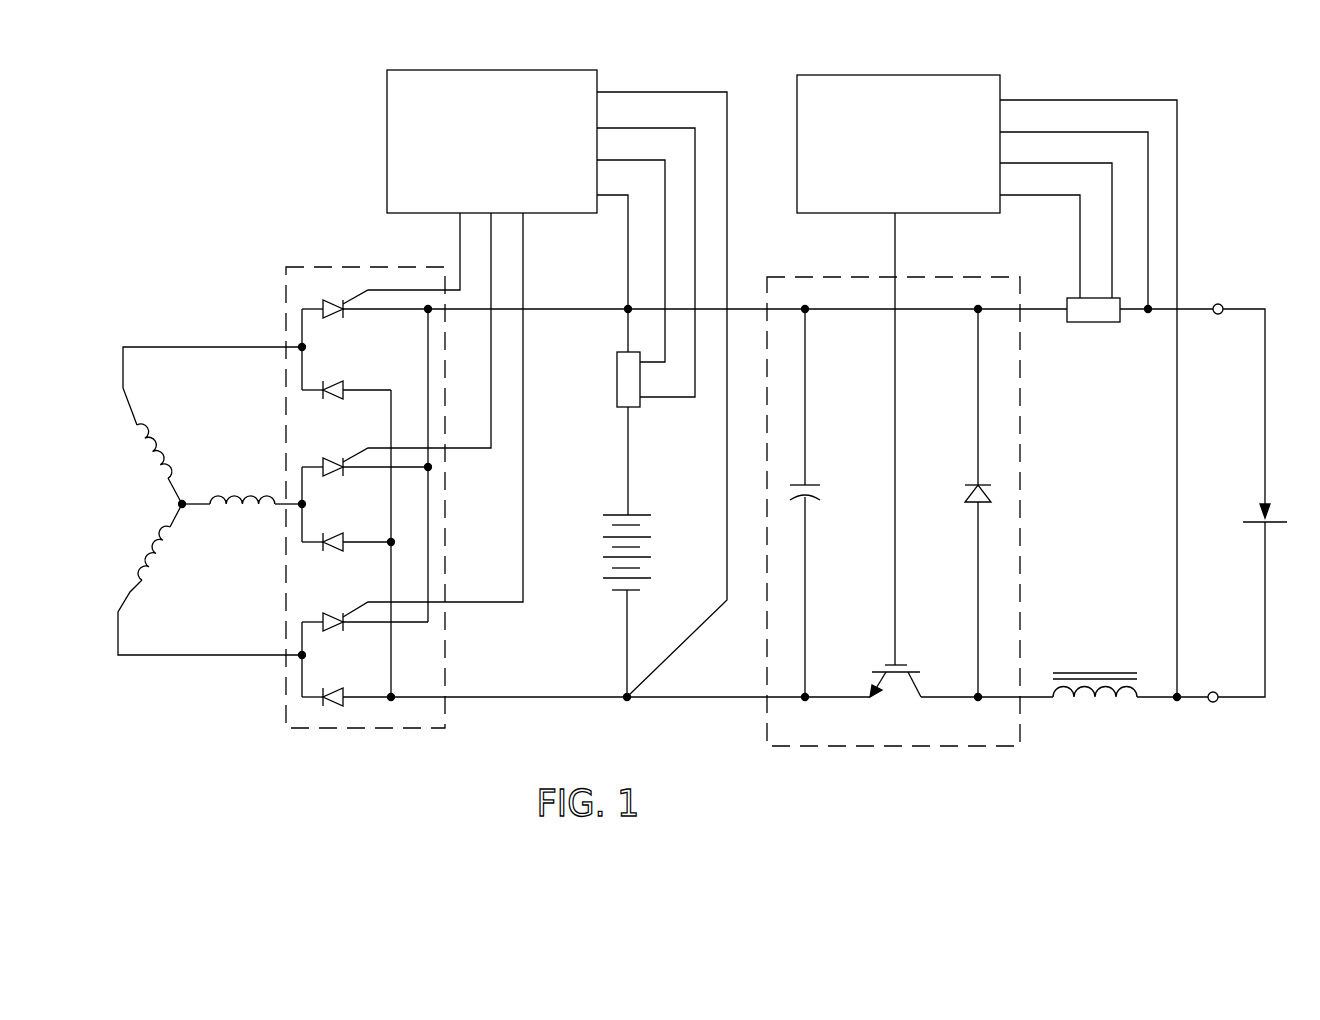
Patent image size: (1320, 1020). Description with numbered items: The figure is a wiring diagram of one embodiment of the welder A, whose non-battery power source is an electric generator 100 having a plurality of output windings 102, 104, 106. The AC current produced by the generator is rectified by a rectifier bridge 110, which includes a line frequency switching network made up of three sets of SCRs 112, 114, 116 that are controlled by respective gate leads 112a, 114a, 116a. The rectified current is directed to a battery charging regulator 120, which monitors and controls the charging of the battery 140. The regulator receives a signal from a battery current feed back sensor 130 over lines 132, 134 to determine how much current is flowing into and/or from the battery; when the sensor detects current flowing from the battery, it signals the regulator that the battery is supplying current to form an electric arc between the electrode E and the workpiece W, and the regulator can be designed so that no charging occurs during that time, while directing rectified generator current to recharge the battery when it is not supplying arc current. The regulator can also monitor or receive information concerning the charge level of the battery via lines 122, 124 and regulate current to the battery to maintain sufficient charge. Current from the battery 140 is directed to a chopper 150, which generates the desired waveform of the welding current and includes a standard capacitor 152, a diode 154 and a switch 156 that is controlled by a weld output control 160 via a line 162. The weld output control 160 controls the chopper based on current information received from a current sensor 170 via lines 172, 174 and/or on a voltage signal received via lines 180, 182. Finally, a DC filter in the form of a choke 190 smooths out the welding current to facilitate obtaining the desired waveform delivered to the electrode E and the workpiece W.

The welder A is at (238, 147).
The electric generator 100 is at (168, 325).
The output winding 102 is at (158, 443).
The output winding 104 is at (160, 562).
The output winding 106 is at (243, 495).
The rectifier bridge 110 is at (356, 738).
The SCR 112 is at (322, 662).
The gate lead 112a is at (357, 612).
The SCR 114 is at (327, 507).
The gate lead 114a is at (357, 459).
The SCR 116 is at (327, 352).
The gate lead 116a is at (352, 296).
The battery charging regulator 120 is at (527, 70).
The line 122 is at (680, 80).
The line 124 is at (628, 235).
The battery current feed back sensor 130 is at (617, 378).
The line 132 is at (683, 400).
The line 134 is at (656, 365).
The battery 140 is at (607, 548).
The chopper 150 is at (893, 746).
The capacitor 152 is at (815, 495).
The diode 154 is at (965, 490).
The switch 156 is at (922, 680).
The weld output control 160 is at (897, 75).
The line 162 is at (895, 392).
The current sensor 170 is at (1090, 322).
The line 172 is at (1080, 218).
The line 174 is at (1112, 235).
The line 180 is at (1148, 258).
The line 182 is at (1180, 165).
The choke 190 is at (1088, 703).
The electrode E is at (1258, 505).
The workpiece W is at (1248, 522).